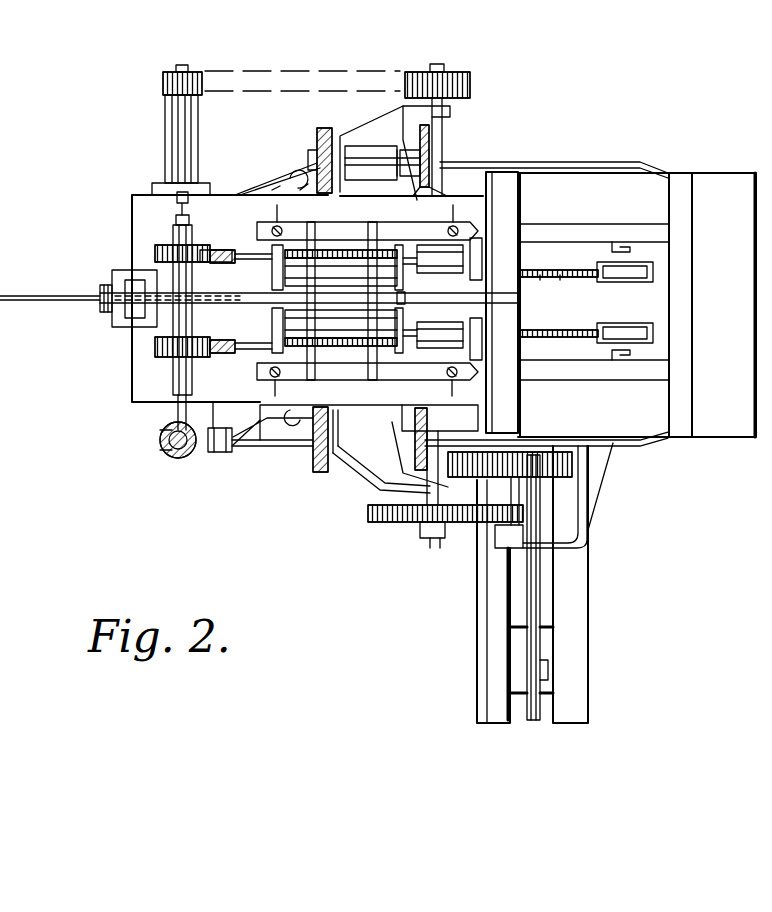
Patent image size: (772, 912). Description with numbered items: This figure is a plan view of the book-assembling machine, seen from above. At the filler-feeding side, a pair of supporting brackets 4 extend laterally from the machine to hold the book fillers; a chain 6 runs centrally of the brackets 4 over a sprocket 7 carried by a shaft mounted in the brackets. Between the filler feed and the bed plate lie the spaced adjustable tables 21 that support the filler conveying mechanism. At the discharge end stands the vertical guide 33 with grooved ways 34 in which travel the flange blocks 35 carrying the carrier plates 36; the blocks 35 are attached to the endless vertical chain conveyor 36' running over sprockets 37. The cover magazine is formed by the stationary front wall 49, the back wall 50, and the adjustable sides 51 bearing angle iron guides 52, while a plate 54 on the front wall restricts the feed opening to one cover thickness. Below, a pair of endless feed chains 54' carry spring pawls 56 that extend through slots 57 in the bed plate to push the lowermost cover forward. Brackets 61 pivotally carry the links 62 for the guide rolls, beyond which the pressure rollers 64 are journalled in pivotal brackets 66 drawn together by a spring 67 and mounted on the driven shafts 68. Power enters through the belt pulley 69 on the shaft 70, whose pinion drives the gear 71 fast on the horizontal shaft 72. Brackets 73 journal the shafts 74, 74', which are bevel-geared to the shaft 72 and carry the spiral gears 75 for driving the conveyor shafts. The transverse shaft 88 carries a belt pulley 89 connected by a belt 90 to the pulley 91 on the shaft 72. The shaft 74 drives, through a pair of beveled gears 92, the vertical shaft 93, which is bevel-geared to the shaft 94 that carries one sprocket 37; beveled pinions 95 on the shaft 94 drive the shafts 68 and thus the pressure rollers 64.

The supporting brackets 4 is at (478, 607).
The chain 6 is at (545, 593).
The sprocket 7 is at (148, 252).
The adjustable tables 21 is at (585, 160).
The vertical guide 33 is at (172, 320).
The grooved ways 34 is at (115, 272).
The flange blocks 35 is at (106, 312).
The carrier plates 36 is at (260, 300).
The endless vertical chain conveyor 36' is at (241, 317).
The sprockets 37 is at (165, 300).
The stationary front wall 49 is at (505, 412).
The back wall 50 is at (672, 410).
The adjustable sides 51 is at (570, 236).
The angle iron guides 52 is at (628, 240).
The plate 54 is at (539, 305).
The endless feed chains 54' is at (559, 306).
The spring pawls 56 is at (612, 291).
The slots 57 is at (546, 326).
The brackets 61 is at (395, 228).
The links 62 is at (372, 245).
The pressure rollers 64 is at (430, 283).
The pivotal brackets 66 is at (210, 252).
The spring 67 is at (408, 298).
The driven shafts 68 is at (300, 262).
The belt pulley 69 is at (570, 478).
The shaft 70 is at (505, 556).
The gear 71 is at (390, 522).
The shaft 72 is at (446, 149).
The brackets 73 is at (355, 145).
The shaft 74 is at (263, 445).
The shaft 74' is at (371, 138).
The spiral gears 75 is at (315, 130).
The shaft 88 is at (200, 72).
The belt pulley 89 is at (170, 72).
The belt 90 is at (360, 71).
The pulley 91 is at (472, 82).
The beveled gears 92 is at (208, 455).
The vertical shaft 93 is at (170, 458).
The shaft 94 is at (182, 200).
The beveled pinions 95 is at (158, 431).